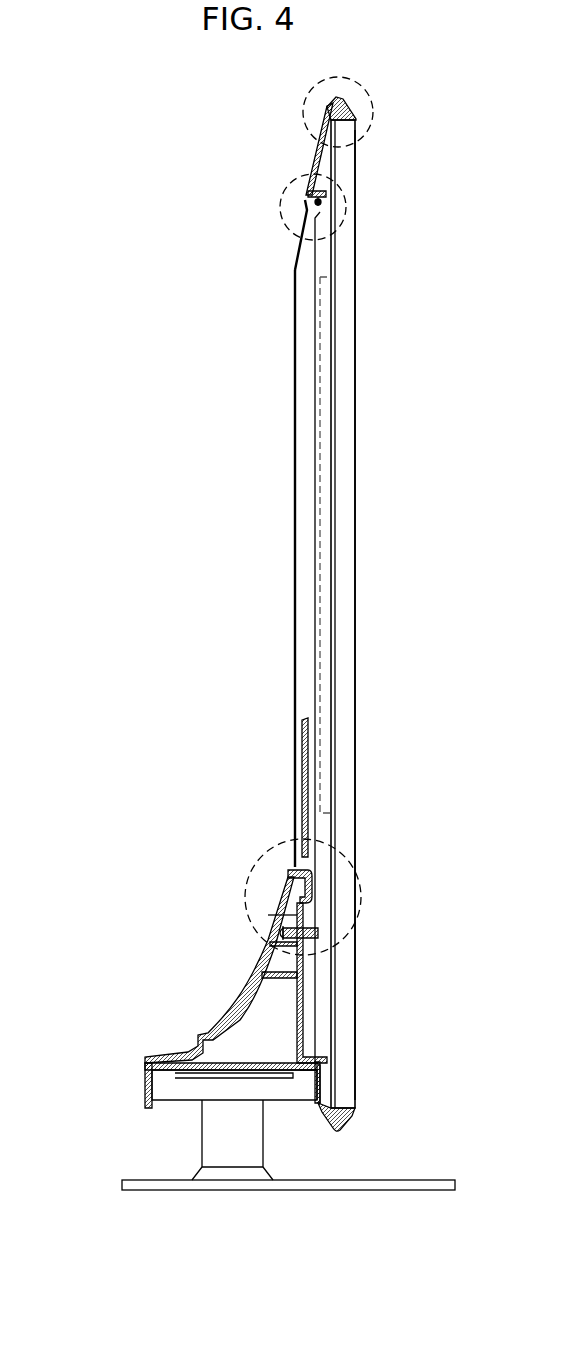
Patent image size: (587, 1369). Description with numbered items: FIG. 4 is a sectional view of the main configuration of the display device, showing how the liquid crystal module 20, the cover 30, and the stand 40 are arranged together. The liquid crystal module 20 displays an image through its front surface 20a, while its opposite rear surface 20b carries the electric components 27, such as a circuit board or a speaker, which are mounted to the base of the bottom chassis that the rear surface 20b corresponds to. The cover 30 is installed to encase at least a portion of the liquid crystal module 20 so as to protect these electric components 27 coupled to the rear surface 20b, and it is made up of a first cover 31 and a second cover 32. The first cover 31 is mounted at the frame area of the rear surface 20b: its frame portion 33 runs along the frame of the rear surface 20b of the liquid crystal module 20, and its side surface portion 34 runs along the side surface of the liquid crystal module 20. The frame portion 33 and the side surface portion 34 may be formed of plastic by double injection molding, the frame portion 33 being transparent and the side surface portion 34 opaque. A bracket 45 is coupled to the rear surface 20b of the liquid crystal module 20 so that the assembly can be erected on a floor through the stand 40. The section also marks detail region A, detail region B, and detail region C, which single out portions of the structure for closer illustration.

The liquid crystal module 20 is at (357, 500).
The front surface 20a is at (356, 293).
The rear surface 20b is at (330, 330).
The electric components 27 is at (320, 440).
The cover 30 is at (283, 471).
The first cover 31 is at (306, 192).
The second cover 32 is at (292, 367).
The frame portion 33 is at (323, 139).
The side surface portion 34 is at (352, 107).
The stand 40 is at (131, 1104).
The bracket 45 is at (314, 768).
The detail region A is at (306, 97).
The detail region B is at (353, 186).
The detail region C is at (255, 872).